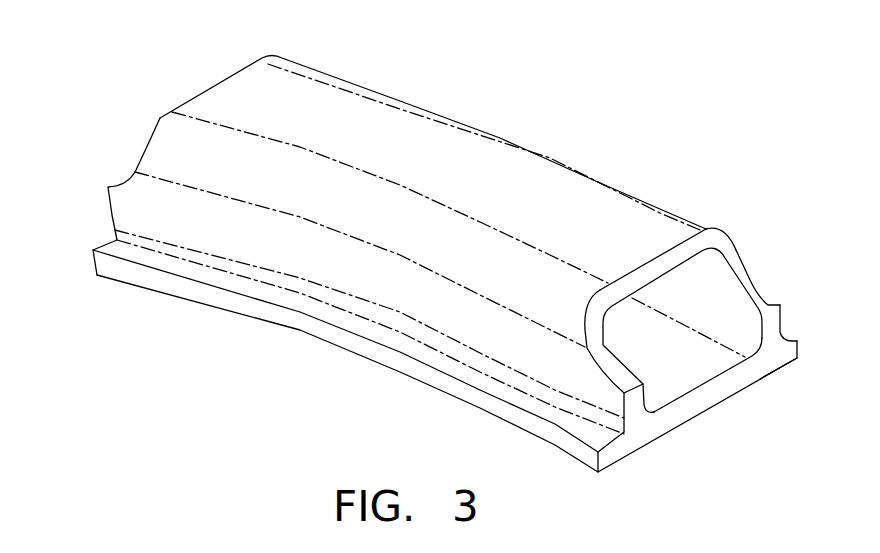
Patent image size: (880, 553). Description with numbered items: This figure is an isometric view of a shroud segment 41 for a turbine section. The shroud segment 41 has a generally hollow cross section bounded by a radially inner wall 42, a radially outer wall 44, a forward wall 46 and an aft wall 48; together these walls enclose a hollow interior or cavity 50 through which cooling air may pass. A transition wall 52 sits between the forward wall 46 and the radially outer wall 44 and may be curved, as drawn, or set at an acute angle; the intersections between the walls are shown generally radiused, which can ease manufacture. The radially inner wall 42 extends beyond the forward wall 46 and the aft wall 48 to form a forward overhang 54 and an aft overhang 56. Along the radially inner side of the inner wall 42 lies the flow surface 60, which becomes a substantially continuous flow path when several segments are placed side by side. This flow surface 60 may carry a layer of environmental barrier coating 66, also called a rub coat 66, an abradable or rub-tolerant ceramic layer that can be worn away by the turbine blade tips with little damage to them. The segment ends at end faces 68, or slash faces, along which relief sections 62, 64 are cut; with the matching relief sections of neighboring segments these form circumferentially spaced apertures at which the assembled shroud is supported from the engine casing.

The shroud segment 41 is at (545, 71).
The radially inner wall 42 is at (668, 353).
The radially outer wall 44 is at (568, 187).
The forward wall 46 is at (141, 203).
The aft wall 48 is at (743, 254).
The cavity 50 is at (706, 377).
The transition wall 52 is at (183, 140).
The forward overhang 54 is at (520, 402).
The aft overhang 56 is at (784, 333).
The flow surface 60 is at (709, 434).
The relief section 62 is at (705, 247).
The relief section 64 is at (118, 130).
The environmental barrier coating 66 is at (627, 464).
The end face 68 is at (774, 388).